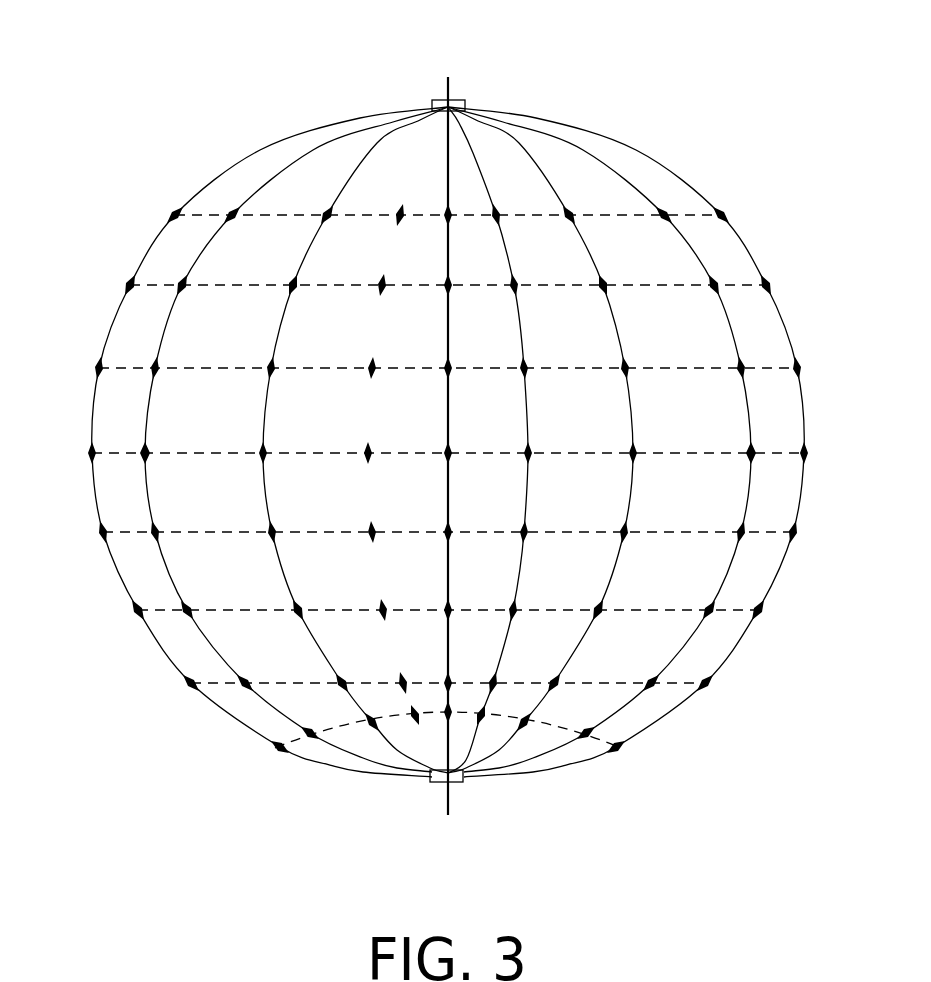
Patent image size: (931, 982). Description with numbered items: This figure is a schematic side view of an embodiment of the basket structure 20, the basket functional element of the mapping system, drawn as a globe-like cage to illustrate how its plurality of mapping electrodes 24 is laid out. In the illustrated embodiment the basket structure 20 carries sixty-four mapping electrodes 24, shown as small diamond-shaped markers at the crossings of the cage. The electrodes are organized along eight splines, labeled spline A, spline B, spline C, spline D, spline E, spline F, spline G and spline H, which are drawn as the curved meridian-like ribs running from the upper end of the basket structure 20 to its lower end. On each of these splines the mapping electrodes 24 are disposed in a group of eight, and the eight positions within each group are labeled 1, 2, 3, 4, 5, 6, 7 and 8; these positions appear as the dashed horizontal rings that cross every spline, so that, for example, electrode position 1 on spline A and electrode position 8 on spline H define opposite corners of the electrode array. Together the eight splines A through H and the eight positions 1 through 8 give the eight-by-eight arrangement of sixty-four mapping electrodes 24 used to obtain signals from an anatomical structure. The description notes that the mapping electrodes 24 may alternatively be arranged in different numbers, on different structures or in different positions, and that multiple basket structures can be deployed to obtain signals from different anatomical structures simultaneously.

The basket structure 20 is at (163, 87).
The mapping electrodes 24 is at (767, 280).
The spline A is at (494, 112).
The spline B is at (512, 140).
The spline C is at (592, 157).
The spline D is at (693, 188).
The spline E is at (421, 105).
The spline F is at (387, 108).
The spline G is at (277, 172).
The spline H is at (333, 199).
The electrode position 1 is at (166, 212).
The electrode position 2 is at (118, 283).
The electrode position 3 is at (87, 363).
The electrode position 4 is at (83, 453).
The electrode position 5 is at (95, 535).
The electrode position 6 is at (127, 612).
The electrode position 7 is at (185, 688).
The electrode position 8 is at (275, 750).